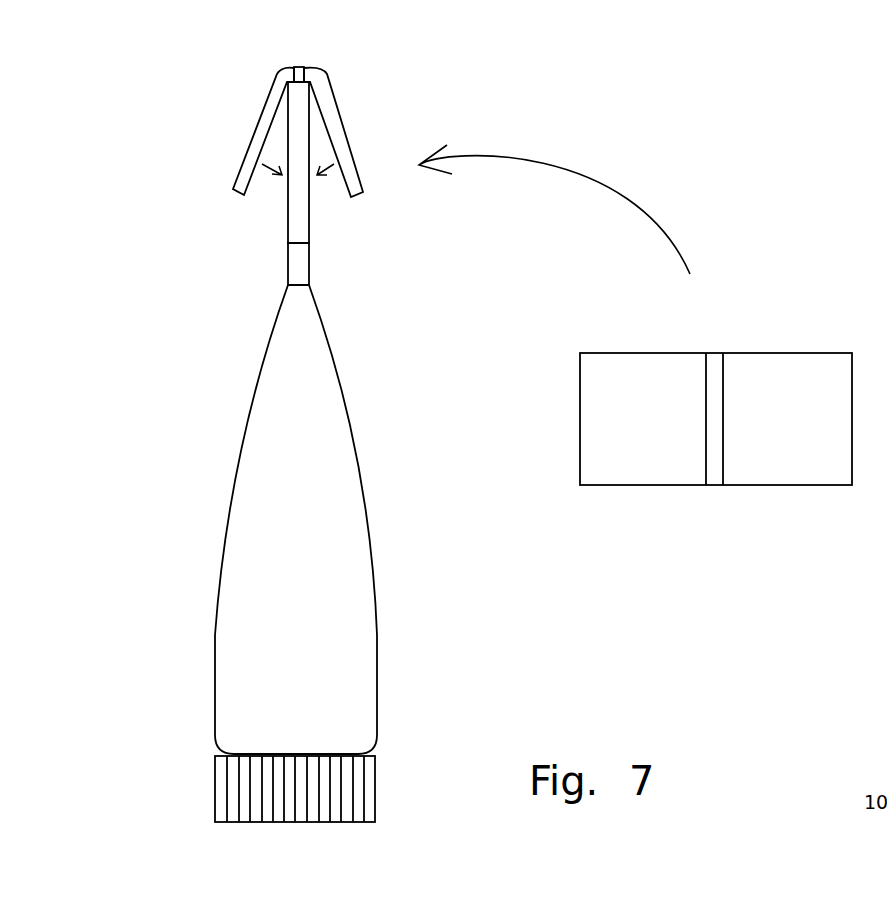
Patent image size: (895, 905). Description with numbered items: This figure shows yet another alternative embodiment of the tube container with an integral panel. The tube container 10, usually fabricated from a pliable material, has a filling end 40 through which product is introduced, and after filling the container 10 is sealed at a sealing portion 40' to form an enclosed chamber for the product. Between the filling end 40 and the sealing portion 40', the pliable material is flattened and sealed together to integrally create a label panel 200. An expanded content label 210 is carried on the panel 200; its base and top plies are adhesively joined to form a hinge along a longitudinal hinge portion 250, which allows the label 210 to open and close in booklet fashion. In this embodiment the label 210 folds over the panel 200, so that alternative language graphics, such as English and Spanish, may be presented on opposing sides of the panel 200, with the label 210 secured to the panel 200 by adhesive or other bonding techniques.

The tube container 10 is at (162, 623).
The filling end 40 is at (242, 162).
The sealing portion 40' is at (242, 287).
The label panel 200 is at (307, 232).
The expanded content label 210 is at (332, 127).
The longitudinal hinge portion 250 is at (298, 64).